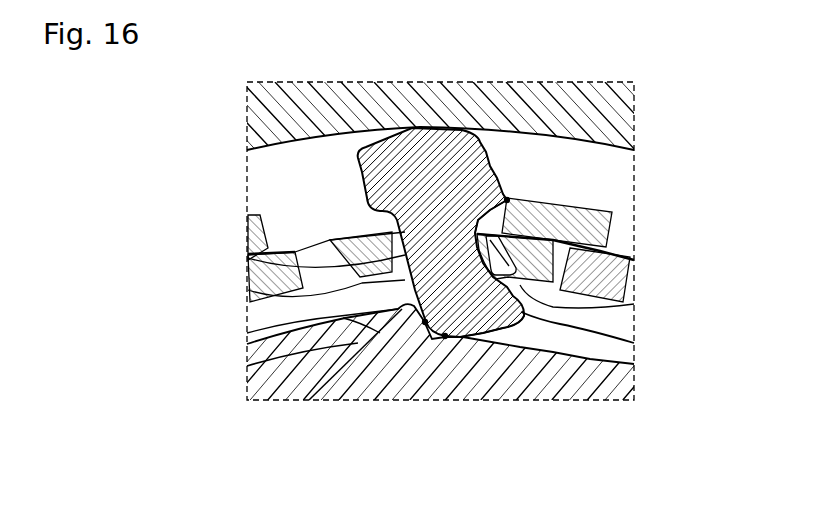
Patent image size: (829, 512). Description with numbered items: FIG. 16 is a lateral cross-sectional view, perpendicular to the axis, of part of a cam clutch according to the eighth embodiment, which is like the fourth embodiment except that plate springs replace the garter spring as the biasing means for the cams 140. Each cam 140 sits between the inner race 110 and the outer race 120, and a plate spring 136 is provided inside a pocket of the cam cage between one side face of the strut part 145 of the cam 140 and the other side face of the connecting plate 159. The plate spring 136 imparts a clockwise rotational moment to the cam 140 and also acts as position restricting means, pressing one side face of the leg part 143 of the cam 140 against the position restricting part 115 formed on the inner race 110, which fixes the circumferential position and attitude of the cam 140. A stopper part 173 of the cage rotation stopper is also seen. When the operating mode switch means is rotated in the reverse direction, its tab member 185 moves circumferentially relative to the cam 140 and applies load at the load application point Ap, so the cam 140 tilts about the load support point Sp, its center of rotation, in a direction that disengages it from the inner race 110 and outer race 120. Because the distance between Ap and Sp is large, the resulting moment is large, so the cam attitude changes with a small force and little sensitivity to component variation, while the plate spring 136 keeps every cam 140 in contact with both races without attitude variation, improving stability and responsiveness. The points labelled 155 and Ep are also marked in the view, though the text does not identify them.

The inner race 110 is at (310, 395).
The position restricting parts 115 is at (247, 333).
The outer race 120 is at (310, 82).
The plate springs 136 is at (634, 304).
The cams 140 is at (358, 186).
The leg parts 143 is at (497, 329).
The strut parts 145 is at (252, 290).
The second coil 155 is at (257, 259).
The connecting plates 159 is at (606, 240).
The stopper parts 173 is at (634, 262).
The tab members 185 is at (549, 204).
The load application point Ap is at (507, 200).
The load support point Sp is at (425, 323).
The end point Ep is at (445, 337).